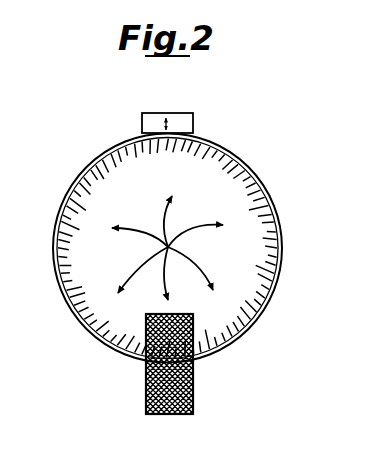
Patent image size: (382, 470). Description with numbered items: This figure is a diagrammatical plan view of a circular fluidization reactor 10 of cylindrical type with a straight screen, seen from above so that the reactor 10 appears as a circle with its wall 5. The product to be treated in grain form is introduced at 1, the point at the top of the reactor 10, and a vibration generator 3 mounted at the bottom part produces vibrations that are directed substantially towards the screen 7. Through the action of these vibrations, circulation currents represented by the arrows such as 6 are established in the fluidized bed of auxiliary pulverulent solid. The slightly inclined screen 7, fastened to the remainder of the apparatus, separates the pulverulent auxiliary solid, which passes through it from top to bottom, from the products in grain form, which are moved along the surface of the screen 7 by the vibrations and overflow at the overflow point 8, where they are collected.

The product inlet 1 is at (168, 247).
The vibration generator 3 is at (182, 113).
The sphere wall 5 is at (53, 278).
The circulation currents 6 is at (238, 228).
The screen 7 is at (188, 396).
The overflow point 8 is at (169, 432).
The fluidization reactor 10 is at (72, 184).